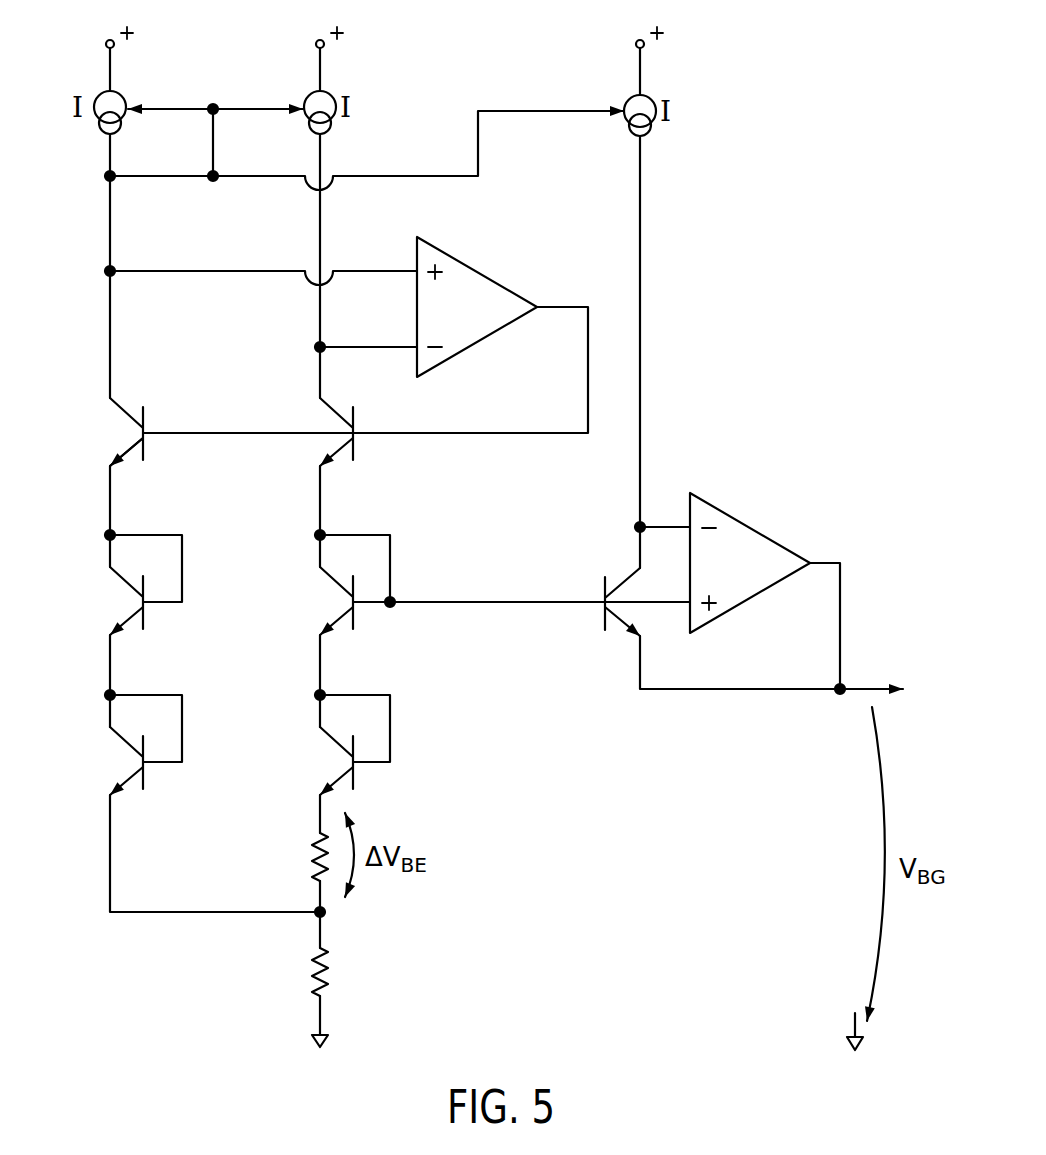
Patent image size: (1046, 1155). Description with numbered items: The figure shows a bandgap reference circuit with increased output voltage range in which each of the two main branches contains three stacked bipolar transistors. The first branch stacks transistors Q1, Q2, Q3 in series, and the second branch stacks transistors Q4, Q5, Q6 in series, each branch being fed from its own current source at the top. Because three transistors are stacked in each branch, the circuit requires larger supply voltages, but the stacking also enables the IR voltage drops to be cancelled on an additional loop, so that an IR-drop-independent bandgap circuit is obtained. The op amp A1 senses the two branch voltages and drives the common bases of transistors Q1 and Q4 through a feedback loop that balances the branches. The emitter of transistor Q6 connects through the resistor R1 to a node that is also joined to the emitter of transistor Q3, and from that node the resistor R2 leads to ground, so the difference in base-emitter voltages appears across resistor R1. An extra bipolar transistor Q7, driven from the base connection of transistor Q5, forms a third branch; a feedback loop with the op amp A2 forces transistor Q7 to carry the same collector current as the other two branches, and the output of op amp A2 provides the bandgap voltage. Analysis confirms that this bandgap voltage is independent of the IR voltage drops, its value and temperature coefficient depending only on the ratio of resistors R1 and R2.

The transistor Q1 is at (210, 433).
The transistor Q2 is at (125, 586).
The transistor Q3 is at (125, 746).
The transistor Q4 is at (315, 433).
The transistor Q5 is at (330, 586).
The transistor Q6 is at (328, 746).
The extra bipolar transistor Q7 is at (615, 611).
The op amp A1 is at (346, 333).
The op amp A2 is at (740, 588).
The resistor R1 is at (299, 857).
The resistor R2 is at (299, 972).